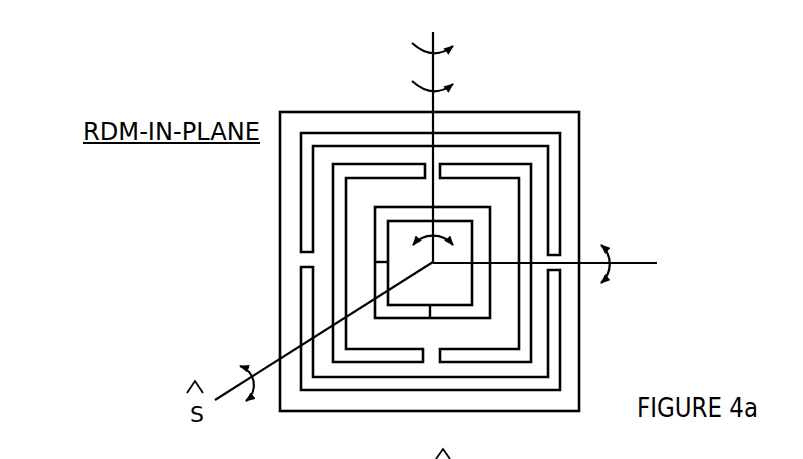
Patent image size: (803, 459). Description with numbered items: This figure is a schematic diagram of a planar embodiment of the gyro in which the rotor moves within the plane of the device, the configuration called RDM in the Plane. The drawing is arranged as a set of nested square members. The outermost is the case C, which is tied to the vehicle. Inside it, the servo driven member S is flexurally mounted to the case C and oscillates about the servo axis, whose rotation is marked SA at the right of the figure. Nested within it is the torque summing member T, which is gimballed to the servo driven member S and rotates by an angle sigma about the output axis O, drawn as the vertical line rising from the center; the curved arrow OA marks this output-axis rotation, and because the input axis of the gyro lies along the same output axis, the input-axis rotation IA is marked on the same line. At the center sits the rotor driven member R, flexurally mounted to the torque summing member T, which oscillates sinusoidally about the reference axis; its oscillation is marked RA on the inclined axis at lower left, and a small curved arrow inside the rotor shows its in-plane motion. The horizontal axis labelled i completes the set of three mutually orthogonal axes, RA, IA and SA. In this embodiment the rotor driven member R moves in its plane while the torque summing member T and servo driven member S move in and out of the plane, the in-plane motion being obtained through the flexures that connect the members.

The case C is at (429, 262).
The servo driven member S is at (430, 261).
The torque summing member T is at (432, 263).
The rotor driven member R is at (432, 262).
The output axis O is at (433, 131).
The output axis rotation OA is at (449, 48).
The input axis rotation IA is at (444, 85).
The servo axis rotation SA is at (625, 256).
The reference axis rotation RA is at (222, 372).
The unit vector i axis i is at (667, 246).